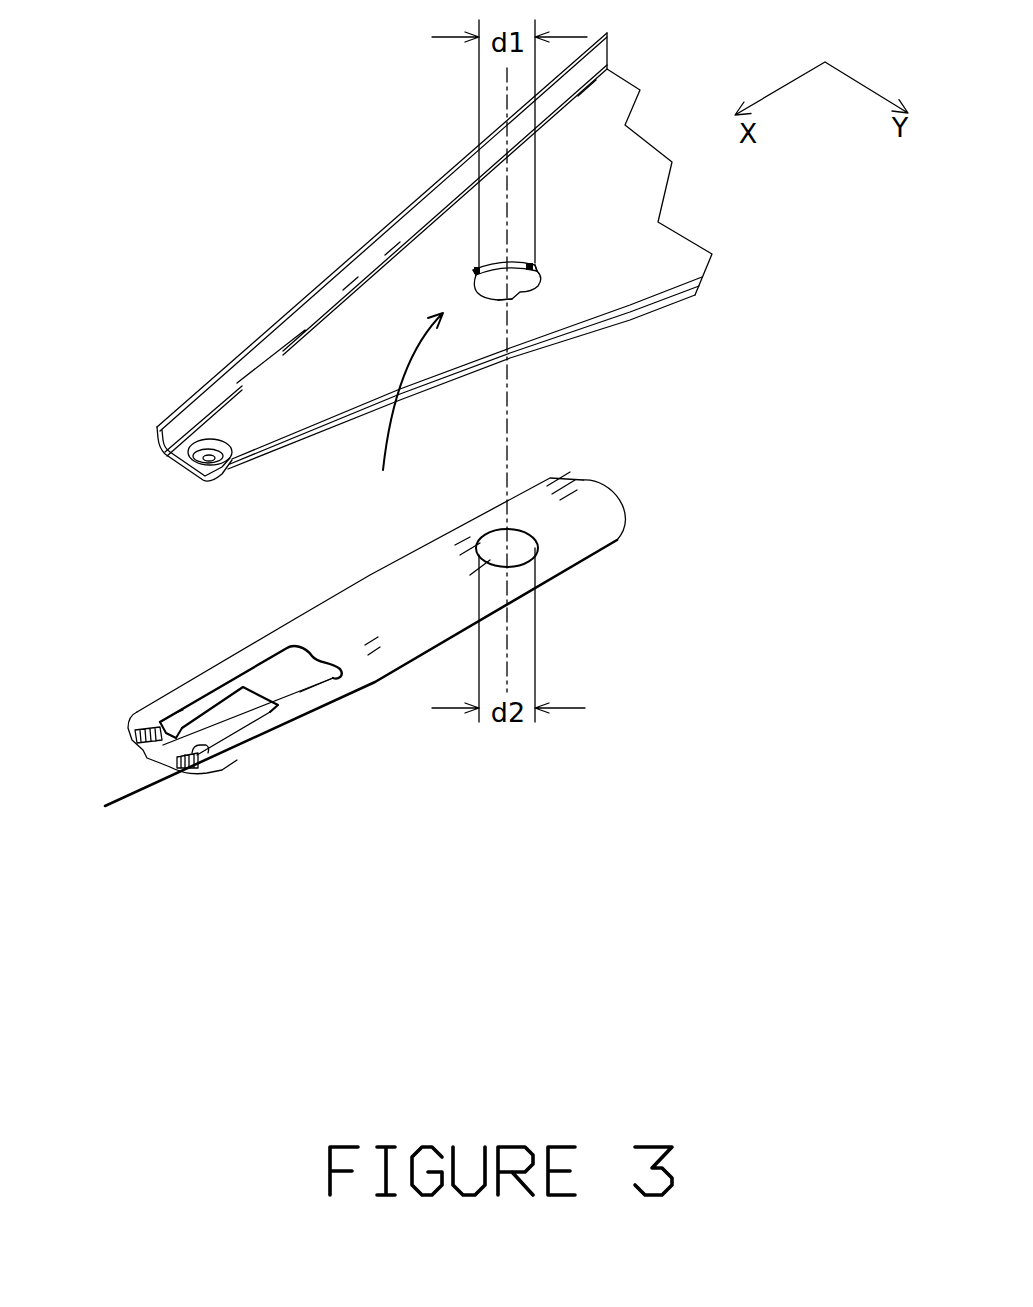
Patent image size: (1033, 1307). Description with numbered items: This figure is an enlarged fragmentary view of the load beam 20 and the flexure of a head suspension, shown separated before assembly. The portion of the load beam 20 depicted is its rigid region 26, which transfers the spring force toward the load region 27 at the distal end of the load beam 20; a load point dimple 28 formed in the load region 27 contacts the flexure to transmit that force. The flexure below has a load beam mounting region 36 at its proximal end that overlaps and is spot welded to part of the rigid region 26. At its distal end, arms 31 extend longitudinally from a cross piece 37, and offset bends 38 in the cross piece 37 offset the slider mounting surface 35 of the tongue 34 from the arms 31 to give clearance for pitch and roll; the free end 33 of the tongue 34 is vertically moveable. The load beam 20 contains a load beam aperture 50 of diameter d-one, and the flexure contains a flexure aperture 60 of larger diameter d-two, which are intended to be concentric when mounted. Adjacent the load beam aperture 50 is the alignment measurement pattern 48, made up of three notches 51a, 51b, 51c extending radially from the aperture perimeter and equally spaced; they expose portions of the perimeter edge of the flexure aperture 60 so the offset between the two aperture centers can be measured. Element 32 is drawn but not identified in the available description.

The load beam 20 is at (666, 57).
The rigid region 26 is at (453, 233).
The load region 27 is at (212, 428).
The load point dimple 28 is at (210, 457).
The arms 31 is at (278, 636).
The tab 32 is at (320, 700).
The free end 33 is at (268, 707).
The tongue 34 is at (208, 723).
The slider mounting surface 35 is at (183, 710).
The load beam mounting region 36 is at (588, 522).
The cross piece 37 is at (135, 729).
The offset bends 38 is at (135, 797).
The alignment measurement pattern 48 is at (404, 408).
The load beam aperture 50 is at (521, 282).
The notch 51a is at (537, 264).
The notch 51b is at (522, 295).
The notch 51c is at (473, 270).
The flexure aperture 60 is at (522, 552).